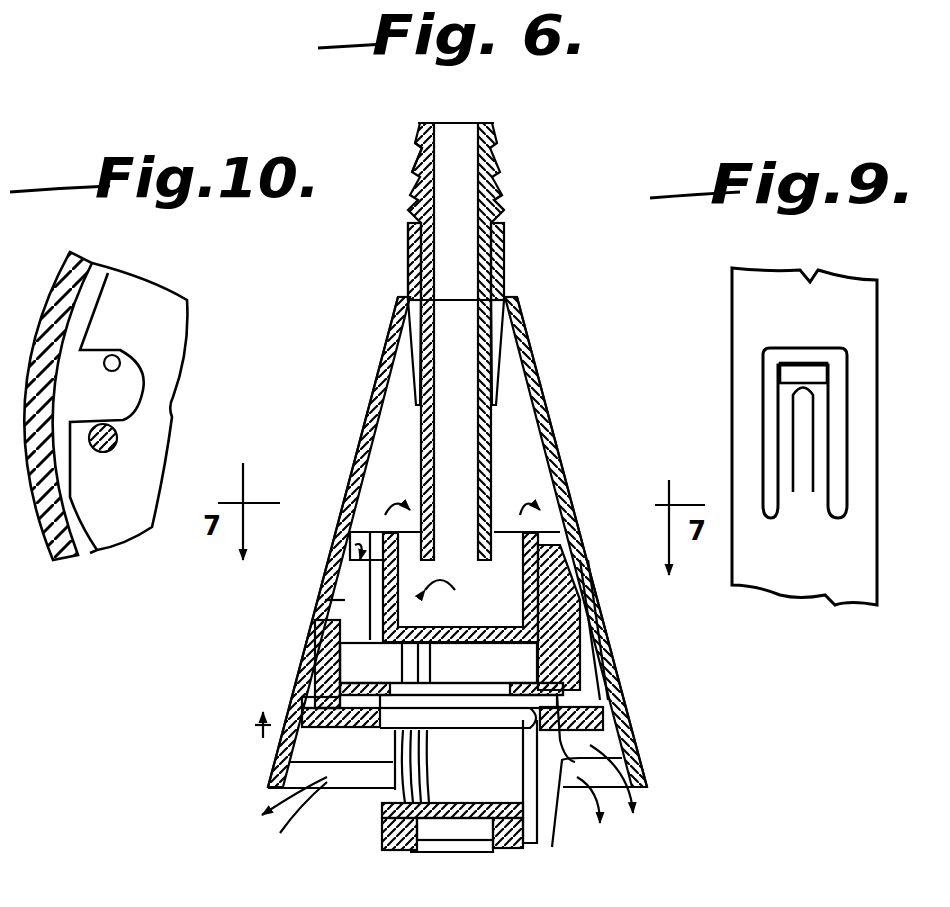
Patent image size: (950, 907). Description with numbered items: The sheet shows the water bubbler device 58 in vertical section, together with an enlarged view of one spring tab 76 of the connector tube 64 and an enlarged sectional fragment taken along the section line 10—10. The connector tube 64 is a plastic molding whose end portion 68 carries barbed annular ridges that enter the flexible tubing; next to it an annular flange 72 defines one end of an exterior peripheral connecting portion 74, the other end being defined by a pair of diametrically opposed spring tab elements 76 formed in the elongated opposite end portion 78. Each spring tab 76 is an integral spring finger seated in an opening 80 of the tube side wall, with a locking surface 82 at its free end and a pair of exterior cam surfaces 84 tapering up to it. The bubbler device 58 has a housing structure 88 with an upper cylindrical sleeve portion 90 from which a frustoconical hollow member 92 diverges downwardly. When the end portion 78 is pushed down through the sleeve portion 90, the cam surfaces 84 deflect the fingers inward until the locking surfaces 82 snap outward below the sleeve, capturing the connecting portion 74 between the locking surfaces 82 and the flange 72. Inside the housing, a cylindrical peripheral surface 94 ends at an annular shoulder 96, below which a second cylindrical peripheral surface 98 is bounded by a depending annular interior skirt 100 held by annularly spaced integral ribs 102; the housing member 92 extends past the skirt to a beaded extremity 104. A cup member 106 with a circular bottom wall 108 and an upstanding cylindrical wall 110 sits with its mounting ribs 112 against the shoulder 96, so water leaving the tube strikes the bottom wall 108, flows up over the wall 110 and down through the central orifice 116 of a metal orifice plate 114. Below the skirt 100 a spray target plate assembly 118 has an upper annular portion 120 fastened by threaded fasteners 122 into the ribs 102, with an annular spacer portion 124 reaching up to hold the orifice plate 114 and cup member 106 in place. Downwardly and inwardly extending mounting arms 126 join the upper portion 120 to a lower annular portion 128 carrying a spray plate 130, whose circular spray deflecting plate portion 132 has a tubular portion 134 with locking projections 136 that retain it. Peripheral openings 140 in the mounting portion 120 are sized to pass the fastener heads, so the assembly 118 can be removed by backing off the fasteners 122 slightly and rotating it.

In FIG. 6, the section line 10 is at (407, 760).
In FIG. 6, the water bubbler device 58 is at (552, 312).
In FIG. 6, the connector tube 64 is at (500, 162).
In FIG. 6, the end portion 68 is at (414, 190).
In FIG. 6, the annular flange 72 is at (506, 210).
In FIG. 6, the exterior peripheral connecting portion 74 is at (506, 260).
In FIG. 9, the exterior peripheral connecting portion 74 is at (748, 294).
In FIG. 6, the spring tab element 76 is at (491, 348).
In FIG. 9, the spring tab element 76 is at (800, 402).
In FIG. 6, the elongated opposite end portion 78 is at (421, 482).
In FIG. 9, the opening 80 is at (765, 370).
In FIG. 6, the locking surface 82 is at (480, 306).
In FIG. 9, the locking surface 82 is at (815, 350).
In FIG. 6, the exterior cam surfaces 84 is at (412, 340).
In FIG. 9, the exterior cam surfaces 84 is at (785, 440).
In FIG. 6, the housing structure 88 is at (368, 420).
In FIG. 6, the cylindrical sleeve portion 90 is at (406, 256).
In FIG. 6, the frustoconical hollow member 92 is at (560, 500).
In FIG. 6, the cylindrical peripheral surface 94 is at (343, 568).
In FIG. 6, the annular shoulder 96 is at (322, 600).
In FIG. 6, the cylindrical peripheral surface 98 is at (315, 645).
In FIG. 6, the depending annular interior skirt 100 is at (590, 684).
In FIG. 6, the integral ribs 102 is at (318, 690).
In FIG. 6, the beaded extremity 104 is at (648, 785).
In FIG. 6, the cup member 106 is at (452, 645).
In FIG. 6, the circular bottom wall 108 is at (440, 620).
In FIG. 6, the cylindrical wall 110 is at (372, 650).
In FIG. 6, the mounting ribs 112 is at (582, 632).
In FIG. 6, the metal orifice plate 114 is at (510, 772).
In FIG. 6, the central orifice 116 is at (522, 690).
In FIG. 6, the spray target plate assembly 118 is at (600, 703).
In FIG. 6, the upper annular portion 120 is at (600, 738).
In FIG. 6, the threaded fasteners 122 is at (302, 712).
In FIG. 10, the threaded fasteners 122 is at (118, 438).
In FIG. 6, the annular spacer portion 124 is at (443, 700).
In FIG. 6, the mounting arms 126 is at (392, 792).
In FIG. 6, the lower annular portion 128 is at (517, 850).
In FIG. 6, the spray plate 130 is at (383, 813).
In FIG. 6, the spray deflecting plate portion 132 is at (500, 800).
In FIG. 6, the tubular portion 134 is at (417, 843).
In FIG. 6, the locking projections 136 is at (407, 843).
In FIG. 10, the peripheral openings 140 is at (115, 354).